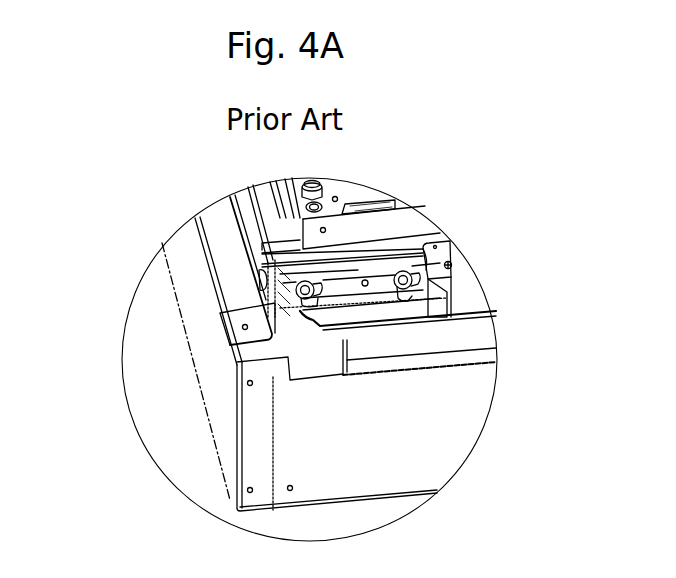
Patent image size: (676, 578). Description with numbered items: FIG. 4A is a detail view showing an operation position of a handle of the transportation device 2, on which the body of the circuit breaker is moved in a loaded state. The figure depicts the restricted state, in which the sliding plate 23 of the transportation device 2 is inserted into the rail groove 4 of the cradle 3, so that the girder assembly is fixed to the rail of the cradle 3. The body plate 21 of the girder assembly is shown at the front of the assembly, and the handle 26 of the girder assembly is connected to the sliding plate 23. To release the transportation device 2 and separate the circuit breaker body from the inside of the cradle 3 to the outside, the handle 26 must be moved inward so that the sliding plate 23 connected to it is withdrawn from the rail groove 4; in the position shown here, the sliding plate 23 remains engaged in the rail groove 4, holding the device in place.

The transportation device 2 is at (452, 247).
The body plate 21 is at (445, 270).
The handle 26 is at (440, 303).
The cradle 3 is at (220, 230).
The sliding plate 23 is at (258, 282).
The rail groove 4 is at (252, 285).